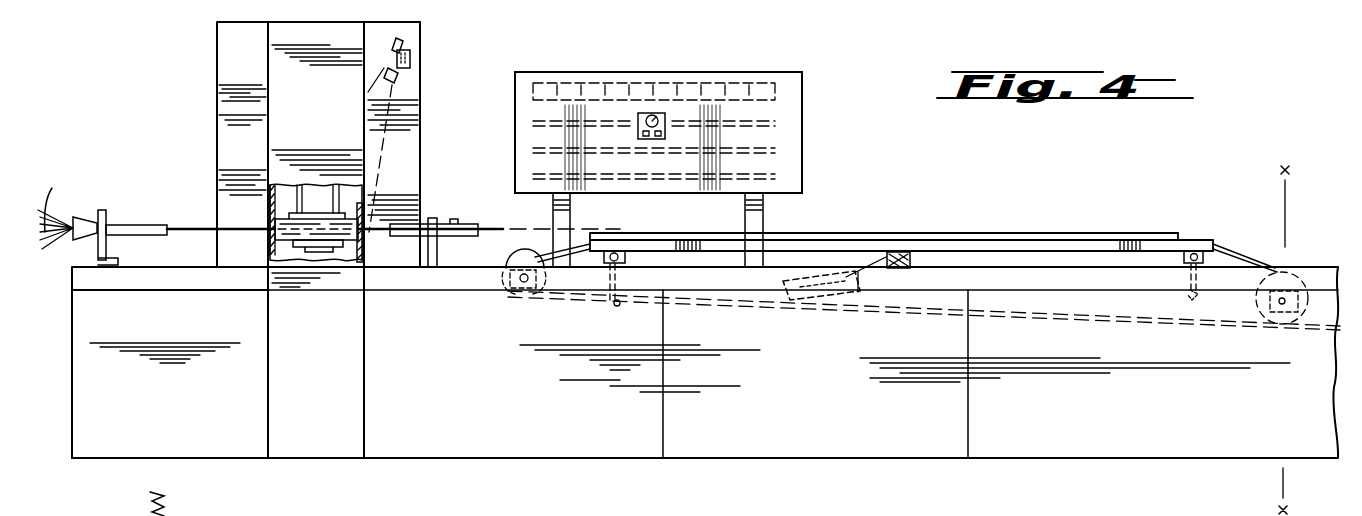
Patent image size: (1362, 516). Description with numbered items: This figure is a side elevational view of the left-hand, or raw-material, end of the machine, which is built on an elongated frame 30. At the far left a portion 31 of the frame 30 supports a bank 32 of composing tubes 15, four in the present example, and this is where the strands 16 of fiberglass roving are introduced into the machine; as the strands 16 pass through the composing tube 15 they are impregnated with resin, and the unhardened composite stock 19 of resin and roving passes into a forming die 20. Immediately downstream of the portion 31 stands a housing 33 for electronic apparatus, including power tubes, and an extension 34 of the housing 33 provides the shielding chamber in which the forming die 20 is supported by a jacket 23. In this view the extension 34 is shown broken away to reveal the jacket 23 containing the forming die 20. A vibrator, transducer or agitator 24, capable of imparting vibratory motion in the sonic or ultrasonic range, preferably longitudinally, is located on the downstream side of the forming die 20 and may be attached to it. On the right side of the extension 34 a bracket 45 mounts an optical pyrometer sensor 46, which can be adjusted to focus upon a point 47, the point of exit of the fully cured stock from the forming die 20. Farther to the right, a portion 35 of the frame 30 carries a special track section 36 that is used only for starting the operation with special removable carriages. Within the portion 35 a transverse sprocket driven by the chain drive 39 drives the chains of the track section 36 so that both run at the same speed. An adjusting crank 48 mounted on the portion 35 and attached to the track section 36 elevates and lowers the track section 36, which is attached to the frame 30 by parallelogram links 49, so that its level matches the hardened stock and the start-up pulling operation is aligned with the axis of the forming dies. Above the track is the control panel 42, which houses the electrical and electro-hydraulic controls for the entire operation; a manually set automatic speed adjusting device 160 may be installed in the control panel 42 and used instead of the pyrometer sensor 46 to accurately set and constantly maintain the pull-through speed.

The composing tube 15 is at (140, 224).
The strands 16 is at (67, 200).
The unhardened composite stock 19 is at (187, 227).
The forming die 20 is at (322, 252).
The jacket 23 is at (297, 230).
The vibrator, transducer or agitator 24 is at (426, 222).
The frame 30 is at (521, 462).
The portion of the frame 31 is at (213, 460).
The bank of composing tubes 32 is at (106, 212).
The housing 33 is at (219, 92).
The extension of the housing 34 is at (282, 112).
The portion of the frame 35 is at (946, 448).
The track section 36 is at (975, 233).
The chain drive 39 is at (1333, 328).
The control panel 42 is at (805, 150).
The bracket 45 is at (412, 58).
The optical pyrometer sensor 46 is at (403, 82).
The point 47 is at (368, 227).
The adjusting crank 48 is at (858, 302).
The parallelogram links 49 is at (606, 290).
The automatic speed adjusting device 160 is at (651, 112).